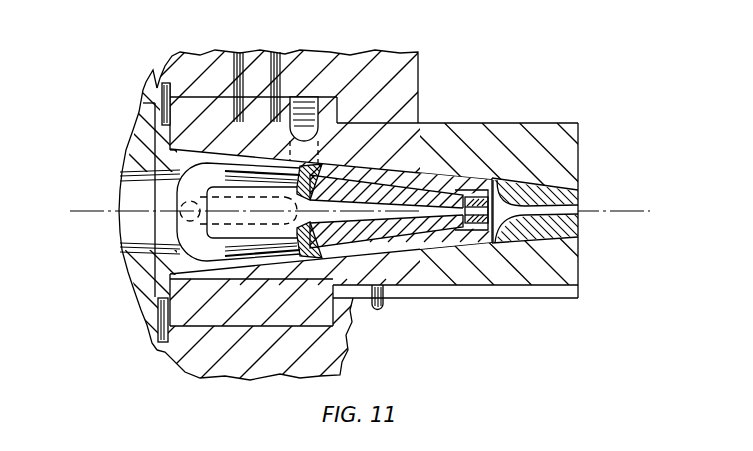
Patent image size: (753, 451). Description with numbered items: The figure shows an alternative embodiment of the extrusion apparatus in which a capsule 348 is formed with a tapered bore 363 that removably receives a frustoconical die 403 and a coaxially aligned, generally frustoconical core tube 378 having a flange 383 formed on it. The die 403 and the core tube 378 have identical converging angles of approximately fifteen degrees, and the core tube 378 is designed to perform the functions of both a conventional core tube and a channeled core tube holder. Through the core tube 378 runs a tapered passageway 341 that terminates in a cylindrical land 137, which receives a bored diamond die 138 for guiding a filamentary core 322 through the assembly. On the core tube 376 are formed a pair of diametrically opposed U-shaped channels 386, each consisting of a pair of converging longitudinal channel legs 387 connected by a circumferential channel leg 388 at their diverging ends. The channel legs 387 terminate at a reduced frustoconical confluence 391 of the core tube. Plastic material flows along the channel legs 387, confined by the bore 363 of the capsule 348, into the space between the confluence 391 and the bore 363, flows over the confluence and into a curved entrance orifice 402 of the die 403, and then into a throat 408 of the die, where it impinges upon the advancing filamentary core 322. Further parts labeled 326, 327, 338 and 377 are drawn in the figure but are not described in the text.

The cylindrical land 137 is at (502, 197).
The bored diamond die 138 is at (465, 222).
The filamentary core 322 is at (108, 212).
The nozzle assembly 326 is at (458, 71).
The housing body 327 is at (236, 372).
The body portion 338 is at (227, 173).
The tapered passageway 341 is at (402, 188).
The capsule 348 is at (540, 123).
The tapered bore 363 is at (397, 200).
The core tube 376 is at (387, 298).
The base plate 377 is at (580, 295).
The core tube 378 is at (420, 283).
The flange 383 is at (157, 135).
The U-shaped channels 386 is at (216, 272).
The longitudinal channel legs 387 is at (248, 176).
The circumferential channel leg 388 is at (193, 243).
The frustoconical confluence 391 is at (428, 188).
The curved entrance orifice 402 is at (532, 200).
The frustoconical die 403 is at (537, 243).
The throat 408 is at (581, 186).